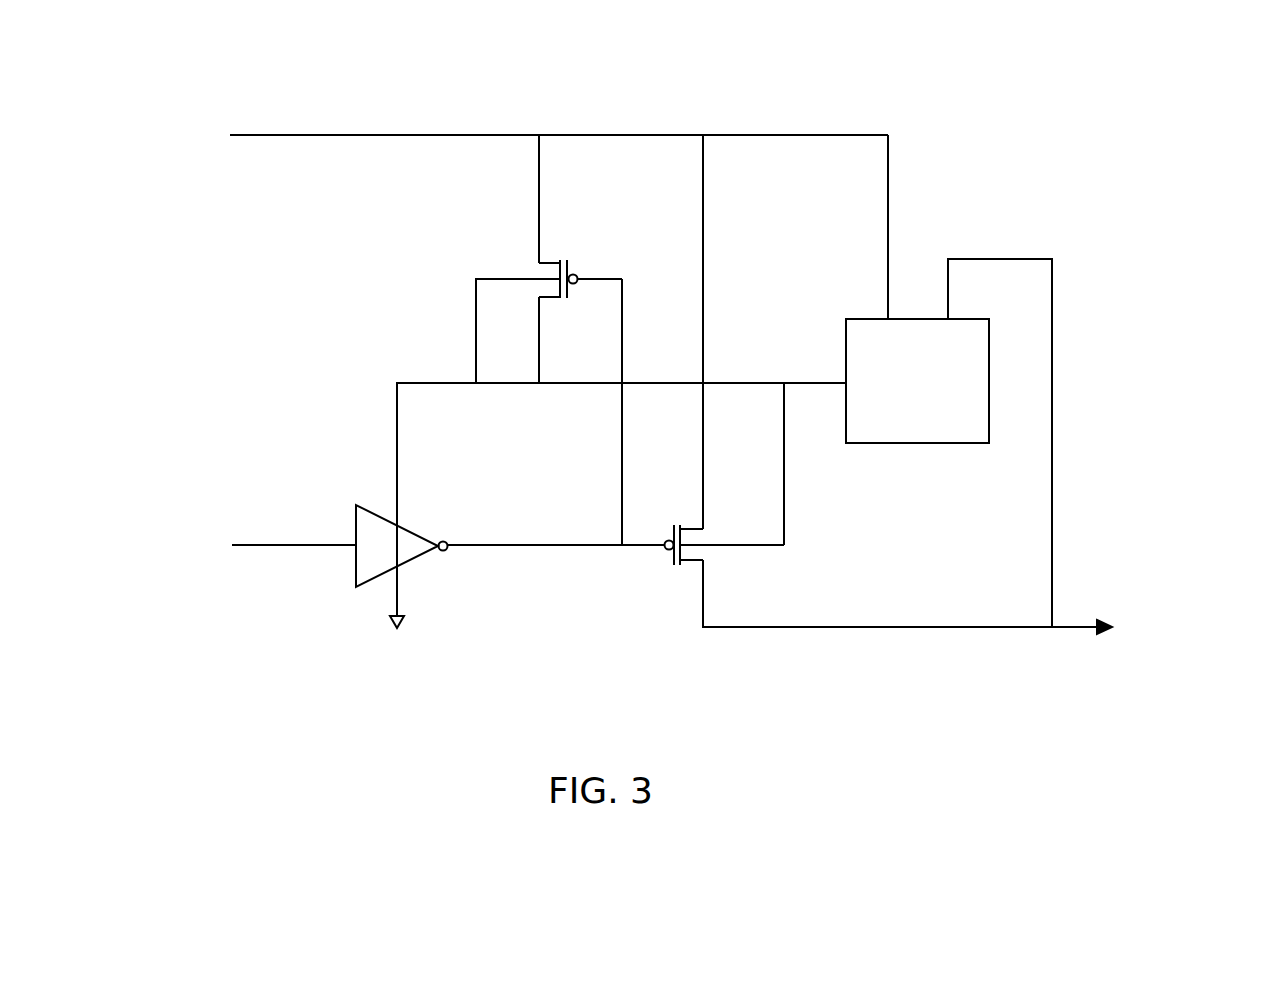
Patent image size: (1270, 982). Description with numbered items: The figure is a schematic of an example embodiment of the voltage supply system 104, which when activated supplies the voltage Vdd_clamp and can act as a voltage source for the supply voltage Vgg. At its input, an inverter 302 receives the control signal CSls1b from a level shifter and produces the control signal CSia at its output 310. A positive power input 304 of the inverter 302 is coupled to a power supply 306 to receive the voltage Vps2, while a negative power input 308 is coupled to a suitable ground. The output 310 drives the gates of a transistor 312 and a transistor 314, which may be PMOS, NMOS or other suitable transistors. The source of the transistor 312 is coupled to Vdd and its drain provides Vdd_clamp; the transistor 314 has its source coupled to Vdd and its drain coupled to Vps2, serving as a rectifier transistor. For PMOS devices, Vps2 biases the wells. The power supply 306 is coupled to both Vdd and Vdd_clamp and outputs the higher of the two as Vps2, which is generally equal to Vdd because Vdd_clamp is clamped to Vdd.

The voltage supply system 104 is at (622, 24).
The inverter 302 is at (367, 523).
The positive power input 304 is at (400, 522).
The power supply 306 is at (917, 381).
The negative power input 308 is at (402, 563).
The output 310 is at (462, 547).
The transistor 312 is at (668, 555).
The transistor 314 is at (568, 263).